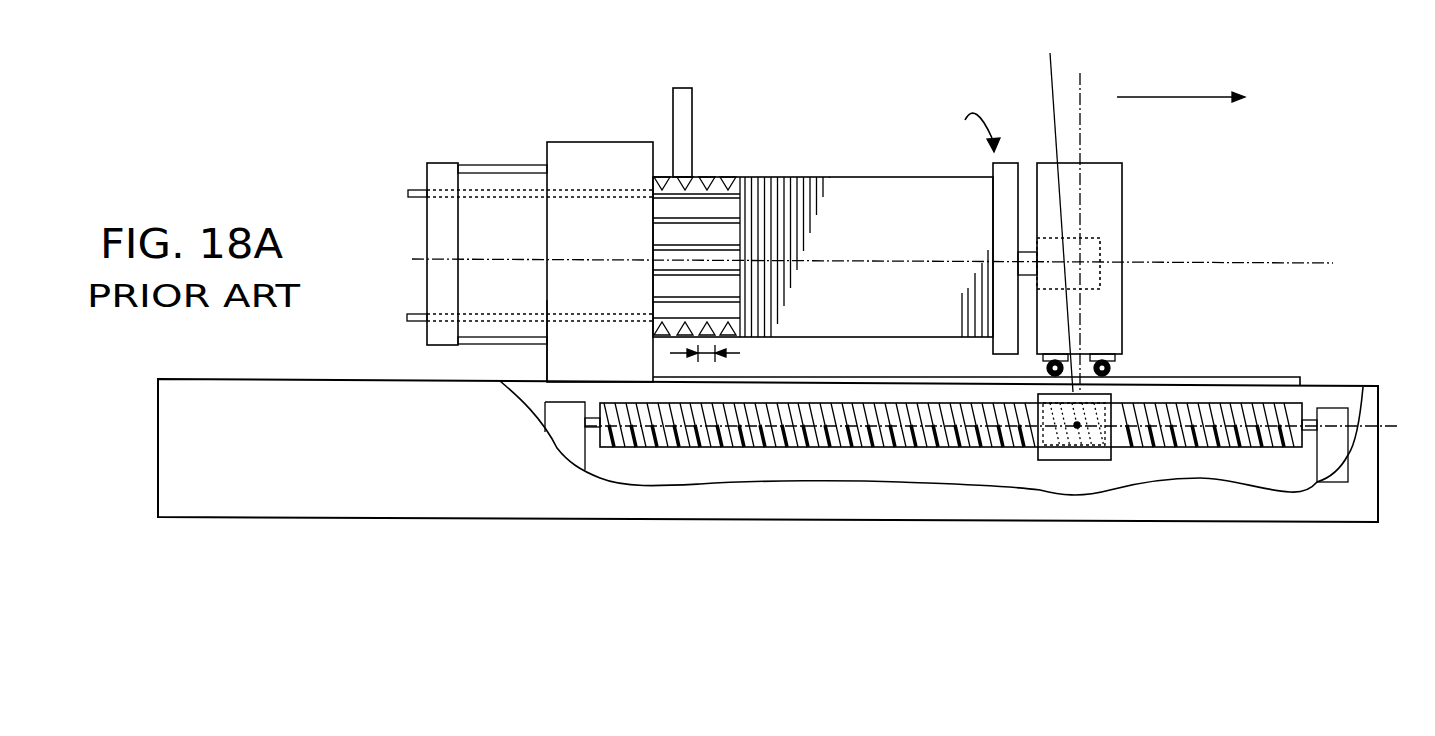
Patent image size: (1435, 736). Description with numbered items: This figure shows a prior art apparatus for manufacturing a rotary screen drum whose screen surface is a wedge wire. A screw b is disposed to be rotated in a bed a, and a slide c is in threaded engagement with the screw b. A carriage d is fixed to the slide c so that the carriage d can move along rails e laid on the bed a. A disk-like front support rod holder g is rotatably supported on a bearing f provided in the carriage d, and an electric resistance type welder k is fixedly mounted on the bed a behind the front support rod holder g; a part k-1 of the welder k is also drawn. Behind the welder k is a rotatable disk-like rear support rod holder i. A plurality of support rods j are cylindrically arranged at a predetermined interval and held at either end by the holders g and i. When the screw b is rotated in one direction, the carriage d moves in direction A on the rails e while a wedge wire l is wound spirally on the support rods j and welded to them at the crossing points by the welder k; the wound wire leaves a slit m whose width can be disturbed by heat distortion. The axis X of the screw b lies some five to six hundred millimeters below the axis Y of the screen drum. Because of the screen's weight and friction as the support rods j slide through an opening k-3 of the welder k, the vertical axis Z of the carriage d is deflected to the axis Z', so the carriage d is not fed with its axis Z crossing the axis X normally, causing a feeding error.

The bed a is at (450, 435).
The screw b is at (1210, 447).
The slide c is at (1077, 460).
The carriage d is at (1115, 300).
The rails e is at (1157, 378).
The bearing f is at (1100, 238).
The front support rod holder g is at (1013, 173).
The rear support rod holder i is at (450, 163).
The support rods j is at (413, 193).
The electric resistance type welder k is at (586, 125).
The post k-1 is at (680, 120).
The opening of the welder k-3 is at (590, 312).
The wedge wire l is at (800, 215).
The slit of the wedge wire m is at (707, 362).
The feeding direction A is at (1193, 98).
The axis of the screw X is at (1004, 427).
The axis of the screen drum Y is at (884, 263).
The vertical axis of the carriage Z is at (1081, 218).
The deflected axis Z' is at (1056, 205).